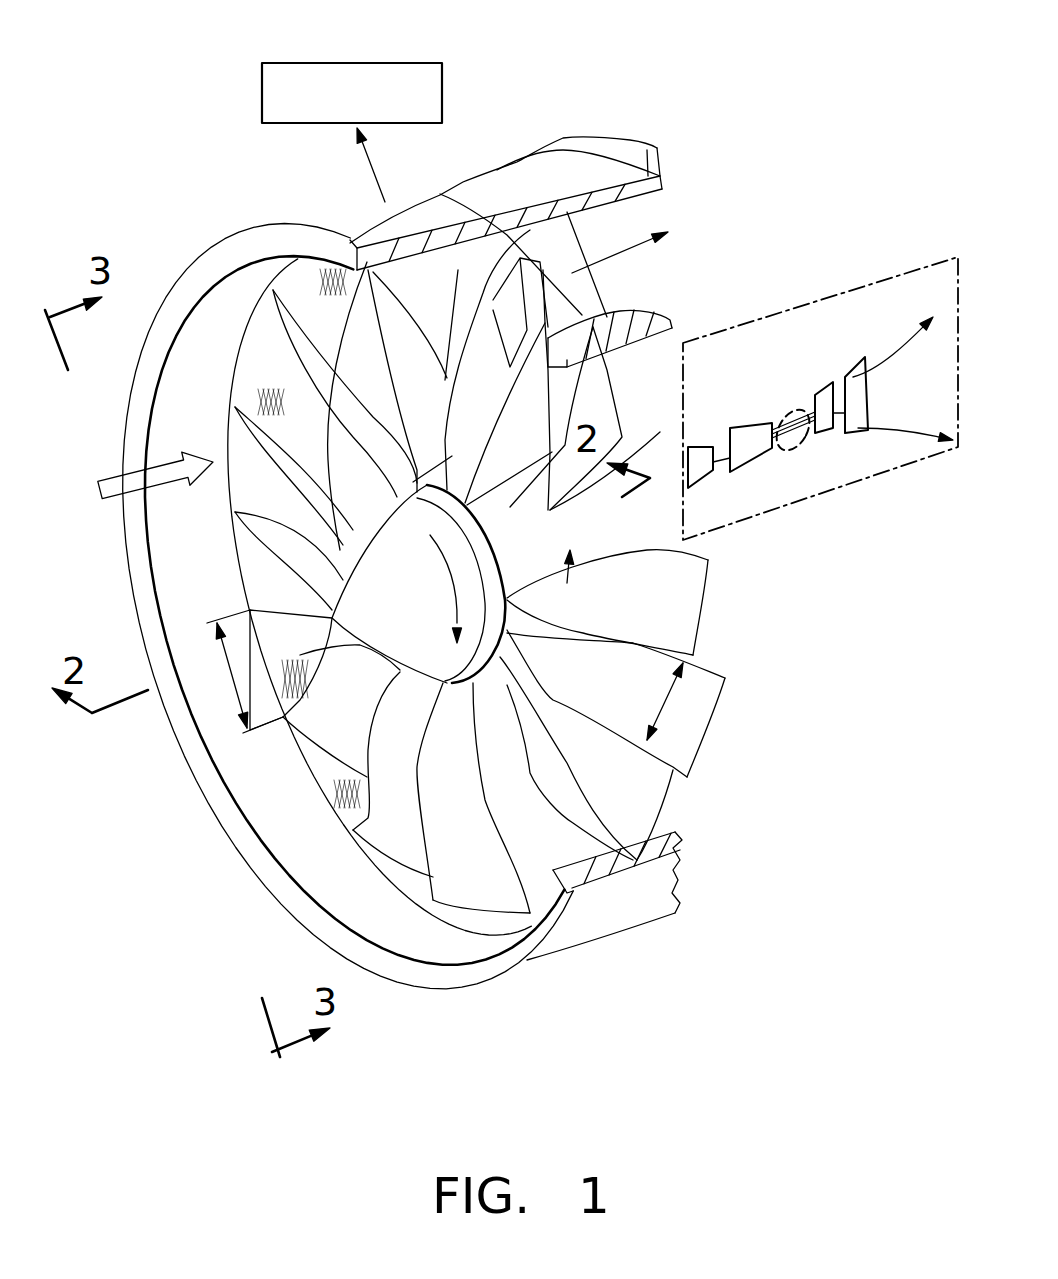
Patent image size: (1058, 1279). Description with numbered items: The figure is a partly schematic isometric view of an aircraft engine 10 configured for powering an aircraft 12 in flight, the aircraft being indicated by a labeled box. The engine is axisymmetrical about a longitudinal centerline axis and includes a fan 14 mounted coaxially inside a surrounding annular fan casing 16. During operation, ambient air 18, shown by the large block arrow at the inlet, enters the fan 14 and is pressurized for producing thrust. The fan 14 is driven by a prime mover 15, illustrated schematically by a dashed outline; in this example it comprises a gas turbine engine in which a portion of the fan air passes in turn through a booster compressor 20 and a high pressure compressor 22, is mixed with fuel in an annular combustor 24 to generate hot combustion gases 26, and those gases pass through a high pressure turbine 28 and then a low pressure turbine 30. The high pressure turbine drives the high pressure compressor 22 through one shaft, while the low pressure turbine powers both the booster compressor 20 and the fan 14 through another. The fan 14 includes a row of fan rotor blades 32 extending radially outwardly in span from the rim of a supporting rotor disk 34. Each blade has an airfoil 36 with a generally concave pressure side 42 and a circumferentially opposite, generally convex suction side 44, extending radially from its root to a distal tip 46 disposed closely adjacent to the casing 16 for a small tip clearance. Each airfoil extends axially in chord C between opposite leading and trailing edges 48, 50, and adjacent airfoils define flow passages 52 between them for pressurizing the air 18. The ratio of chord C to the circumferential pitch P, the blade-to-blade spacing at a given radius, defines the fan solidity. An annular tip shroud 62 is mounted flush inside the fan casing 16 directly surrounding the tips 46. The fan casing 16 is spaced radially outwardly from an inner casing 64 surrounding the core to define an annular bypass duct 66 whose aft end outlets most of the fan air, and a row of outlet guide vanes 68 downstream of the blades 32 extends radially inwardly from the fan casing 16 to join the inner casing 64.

The aircraft engine 10 is at (696, 89).
The aircraft 12 is at (355, 62).
The fan 14 is at (235, 530).
The prime mover 15 is at (797, 303).
The fan casing 16 is at (197, 256).
The ambient air 18 is at (115, 477).
The booster compressor 20 is at (698, 447).
The high pressure compressor 22 is at (753, 423).
The annular combustor 24 is at (787, 405).
The hot combustion gases 26 is at (893, 350).
The high pressure turbine 28 is at (828, 387).
The low pressure turbine 30 is at (857, 435).
The fan rotor blades 32 is at (692, 753).
The rotor disk 34 is at (580, 500).
The airfoil 36 is at (403, 837).
The pressure side 42 is at (492, 417).
The suction side 44 is at (582, 749).
The tip 46 is at (713, 578).
The leading edge 48 is at (607, 727).
The trailing edge 50 is at (713, 673).
The flow passages 52 is at (567, 583).
The tip shroud 62 is at (417, 882).
The inner casing 64 is at (653, 317).
The bypass duct 66 is at (640, 294).
The outlet guide vanes 68 is at (558, 245).
The circumferential pitch P is at (228, 677).
The chord C is at (663, 700).